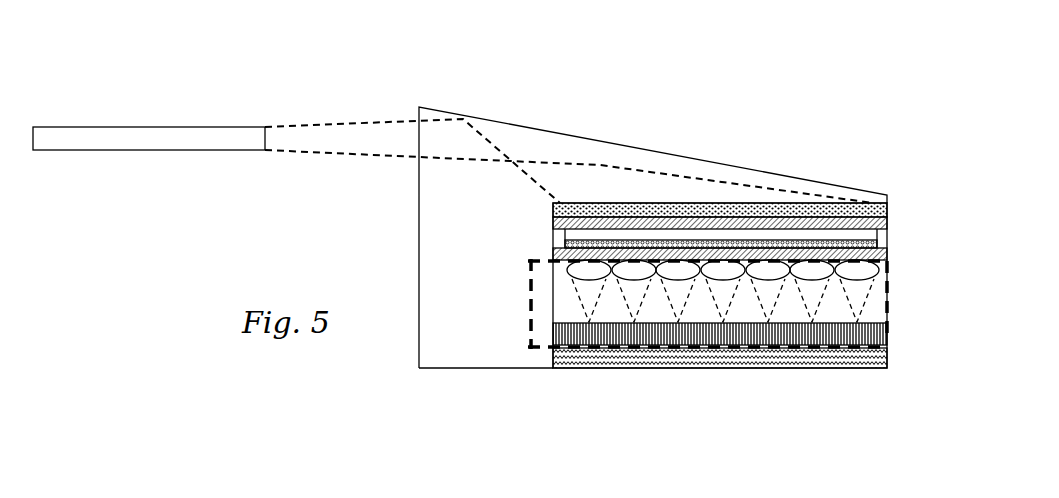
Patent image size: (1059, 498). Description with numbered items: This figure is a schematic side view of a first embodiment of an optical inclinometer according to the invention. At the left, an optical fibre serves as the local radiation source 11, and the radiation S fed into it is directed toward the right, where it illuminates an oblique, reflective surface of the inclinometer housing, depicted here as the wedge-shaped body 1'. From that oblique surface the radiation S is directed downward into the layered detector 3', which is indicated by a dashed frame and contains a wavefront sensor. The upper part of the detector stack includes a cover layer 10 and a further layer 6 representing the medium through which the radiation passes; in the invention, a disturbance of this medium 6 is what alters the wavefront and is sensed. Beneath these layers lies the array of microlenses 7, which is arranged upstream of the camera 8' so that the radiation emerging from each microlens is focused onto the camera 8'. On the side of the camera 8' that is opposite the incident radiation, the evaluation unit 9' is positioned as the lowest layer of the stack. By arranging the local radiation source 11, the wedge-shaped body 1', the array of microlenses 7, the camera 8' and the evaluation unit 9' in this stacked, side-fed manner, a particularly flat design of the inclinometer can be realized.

The local radiation source 11 is at (149, 176).
The radiation S is at (569, 161).
The light guide wedge 1' is at (601, 237).
The top cover layer 10 is at (720, 146).
The disturbed medium 6 is at (666, 239).
The array of microlenses 7 is at (725, 220).
The detector 3' is at (661, 304).
The camera 8' is at (720, 368).
The evaluation unit 9' is at (720, 391).